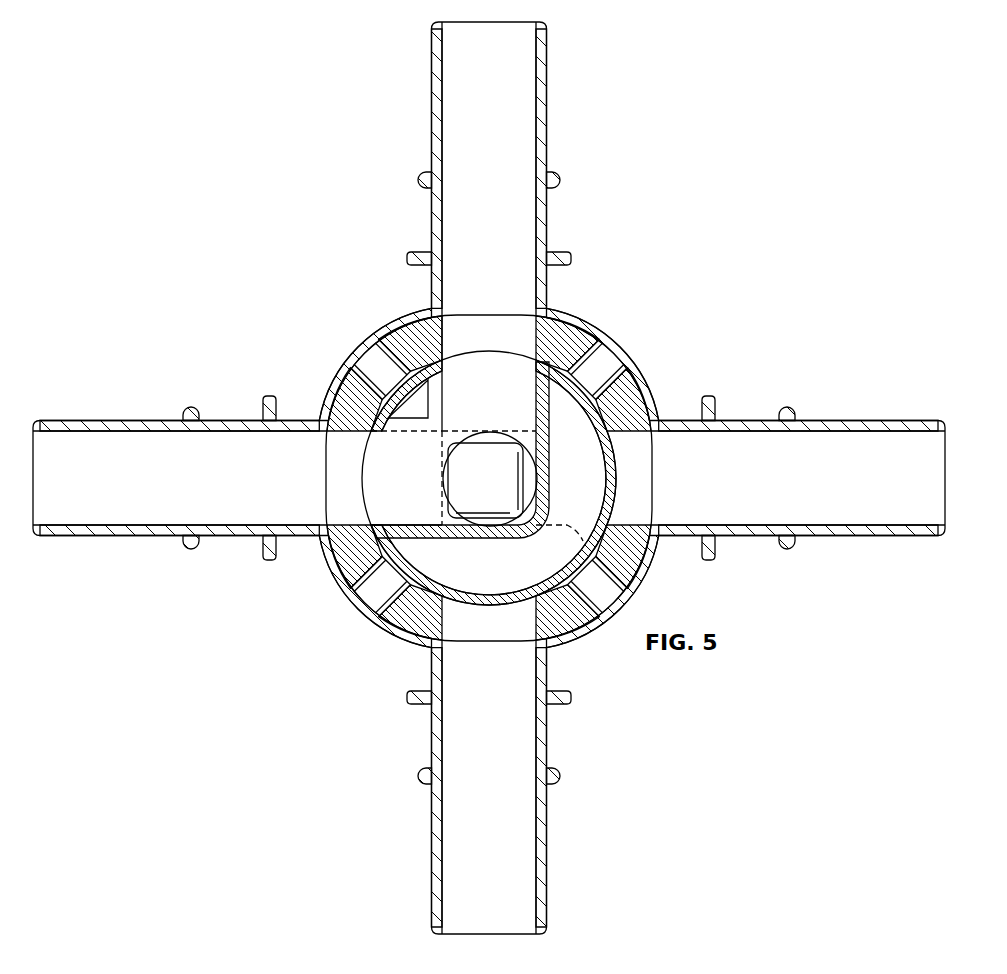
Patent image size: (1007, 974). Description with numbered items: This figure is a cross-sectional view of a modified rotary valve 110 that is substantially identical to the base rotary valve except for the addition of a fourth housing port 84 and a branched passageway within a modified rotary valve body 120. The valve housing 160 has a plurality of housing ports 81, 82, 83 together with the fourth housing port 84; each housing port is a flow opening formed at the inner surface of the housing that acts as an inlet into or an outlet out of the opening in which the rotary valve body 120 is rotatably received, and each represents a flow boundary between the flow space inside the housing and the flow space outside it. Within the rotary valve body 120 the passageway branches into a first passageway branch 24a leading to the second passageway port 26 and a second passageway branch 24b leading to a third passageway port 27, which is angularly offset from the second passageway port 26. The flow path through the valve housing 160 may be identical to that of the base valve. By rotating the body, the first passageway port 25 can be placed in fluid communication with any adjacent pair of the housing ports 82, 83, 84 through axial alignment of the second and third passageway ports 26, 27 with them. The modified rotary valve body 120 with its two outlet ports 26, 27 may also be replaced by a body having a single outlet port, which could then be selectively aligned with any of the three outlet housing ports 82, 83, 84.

The modified rotary valve 110 is at (659, 316).
The valve housing 160 is at (657, 390).
The rotary valve body 120 is at (386, 576).
The housing port 81 is at (659, 525).
The housing port 82 is at (336, 531).
The housing port 83 is at (441, 315).
The fourth housing port 84 is at (535, 642).
The first passageway branch 24a is at (396, 434).
The second passageway branch 24b is at (445, 397).
The first passageway port 25 is at (452, 512).
The second passageway port 26 is at (372, 528).
The third passageway port 27 is at (447, 359).